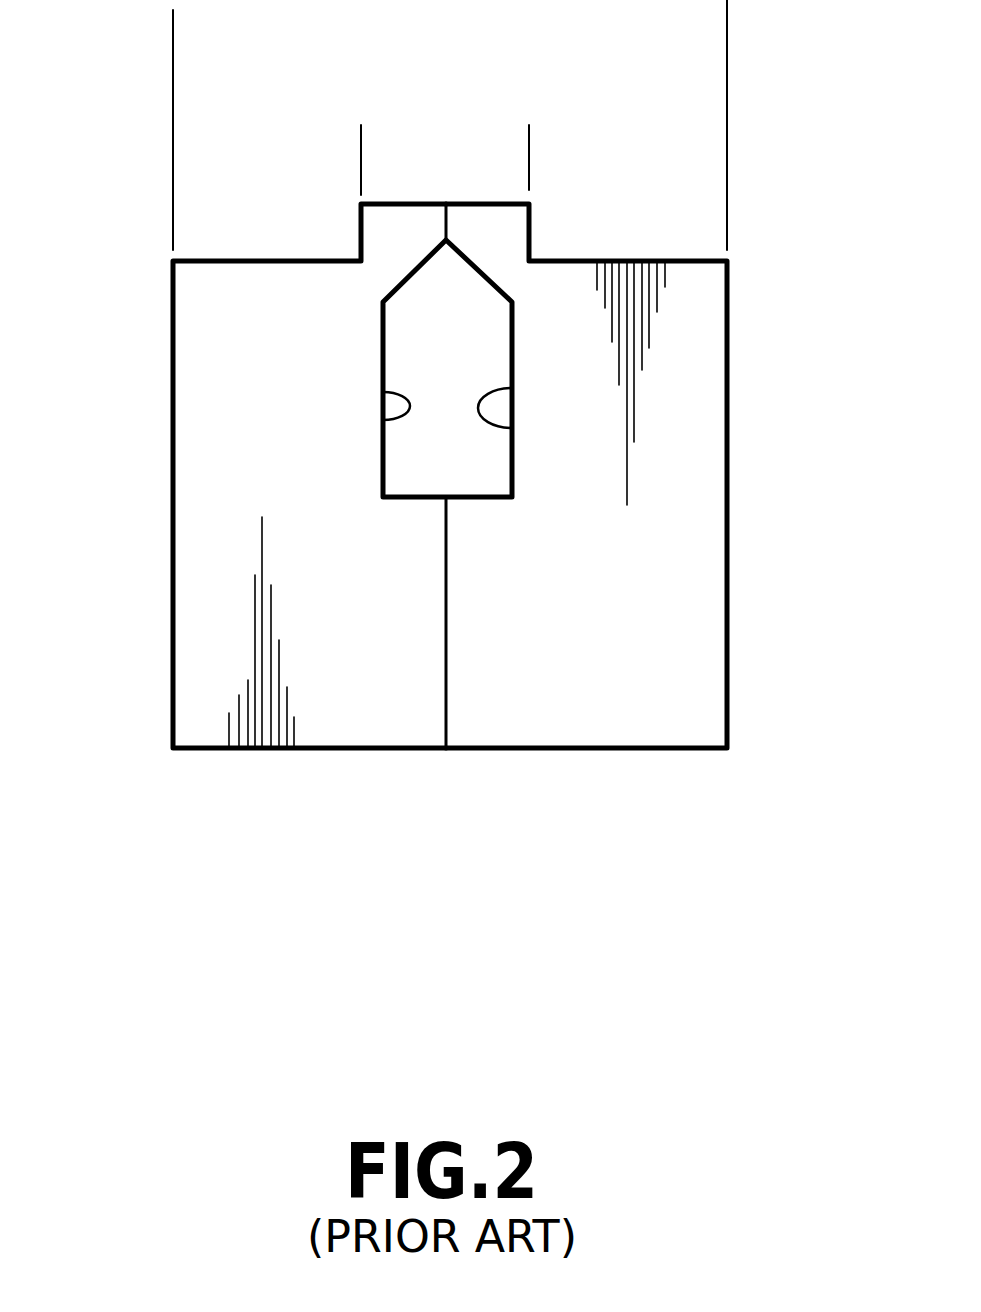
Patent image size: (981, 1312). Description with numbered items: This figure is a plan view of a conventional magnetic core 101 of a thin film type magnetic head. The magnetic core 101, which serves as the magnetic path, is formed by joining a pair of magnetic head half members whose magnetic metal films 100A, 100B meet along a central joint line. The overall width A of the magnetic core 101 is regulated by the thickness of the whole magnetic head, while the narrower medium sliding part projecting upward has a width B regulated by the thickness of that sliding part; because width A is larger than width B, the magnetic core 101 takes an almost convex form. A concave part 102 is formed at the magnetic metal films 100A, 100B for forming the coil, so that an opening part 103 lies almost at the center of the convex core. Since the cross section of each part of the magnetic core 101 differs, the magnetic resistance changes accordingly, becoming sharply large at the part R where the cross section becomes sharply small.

The width of the magnetic core A is at (727, 24).
The width of the medium sliding part B is at (529, 143).
The part where cross section becomes sharply small R is at (515, 273).
The magnetic metal film 100A is at (338, 727).
The magnetic metal film 100B is at (593, 722).
The magnetic core 101 is at (665, 832).
The concave part 102 is at (395, 420).
The opening part 103 is at (428, 435).